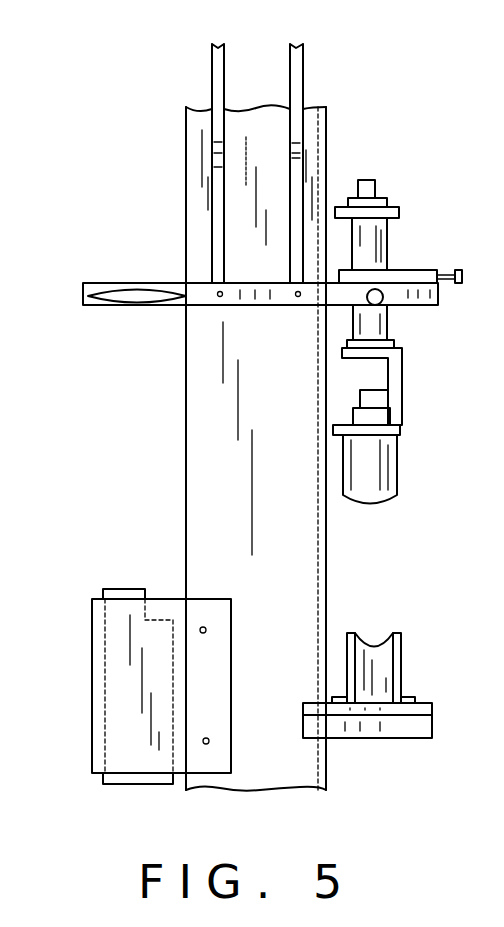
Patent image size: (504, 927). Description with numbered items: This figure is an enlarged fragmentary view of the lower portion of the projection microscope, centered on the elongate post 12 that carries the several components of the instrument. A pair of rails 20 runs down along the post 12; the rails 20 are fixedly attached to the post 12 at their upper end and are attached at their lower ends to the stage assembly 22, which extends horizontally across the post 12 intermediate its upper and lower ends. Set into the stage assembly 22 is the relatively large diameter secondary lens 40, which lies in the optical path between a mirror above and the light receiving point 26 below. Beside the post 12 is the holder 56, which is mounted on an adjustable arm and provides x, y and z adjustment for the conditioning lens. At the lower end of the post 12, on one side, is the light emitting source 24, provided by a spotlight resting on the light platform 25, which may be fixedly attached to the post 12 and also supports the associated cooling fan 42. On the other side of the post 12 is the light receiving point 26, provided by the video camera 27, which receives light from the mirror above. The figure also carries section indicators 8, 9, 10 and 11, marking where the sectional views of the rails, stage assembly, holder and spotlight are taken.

The post 12 is at (328, 148).
The rails 20 is at (225, 52).
The stage assembly 22 is at (110, 308).
The secondary lens 40 is at (117, 283).
The holder 56 is at (402, 410).
The light emitting source 24 is at (387, 628).
The light platform 25 is at (417, 700).
The cooling fan 42 is at (395, 738).
The video camera 27 is at (92, 741).
The light receiving point 26 is at (133, 589).
The section line 8- 8 is at (165, 165).
The section line 9- 9 is at (317, 310).
The section line 10- 10 is at (317, 387).
The section line 11- 11 is at (137, 563).